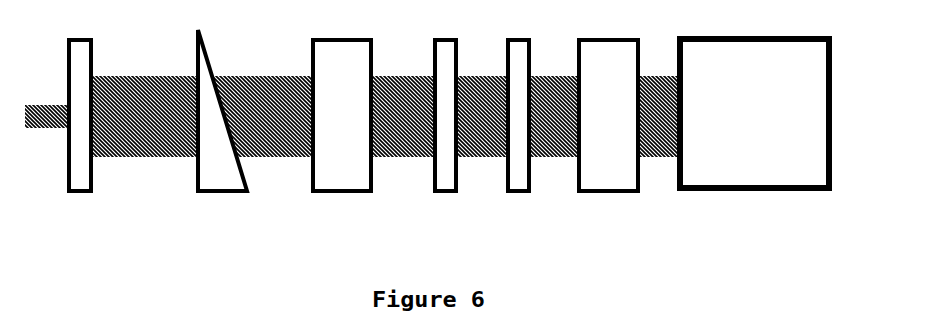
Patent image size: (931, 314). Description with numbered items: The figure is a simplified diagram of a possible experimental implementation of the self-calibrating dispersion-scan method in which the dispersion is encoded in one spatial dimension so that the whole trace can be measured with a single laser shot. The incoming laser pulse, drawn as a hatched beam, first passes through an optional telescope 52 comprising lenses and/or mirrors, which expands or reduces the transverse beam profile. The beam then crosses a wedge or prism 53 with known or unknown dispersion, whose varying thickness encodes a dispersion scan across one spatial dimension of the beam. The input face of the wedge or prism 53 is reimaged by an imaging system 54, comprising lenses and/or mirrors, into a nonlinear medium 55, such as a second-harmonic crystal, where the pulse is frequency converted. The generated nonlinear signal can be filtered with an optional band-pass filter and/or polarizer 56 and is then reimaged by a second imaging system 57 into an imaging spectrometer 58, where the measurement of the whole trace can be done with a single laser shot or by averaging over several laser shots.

The telescope 52 is at (79, 145).
The wedge or prism 53 is at (222, 140).
The imaging system 54 is at (342, 145).
The nonlinear medium 55 is at (446, 145).
The polarizer 56 is at (518, 145).
The imaging system 57 is at (608, 145).
The imaging spectrometer 58 is at (754, 144).